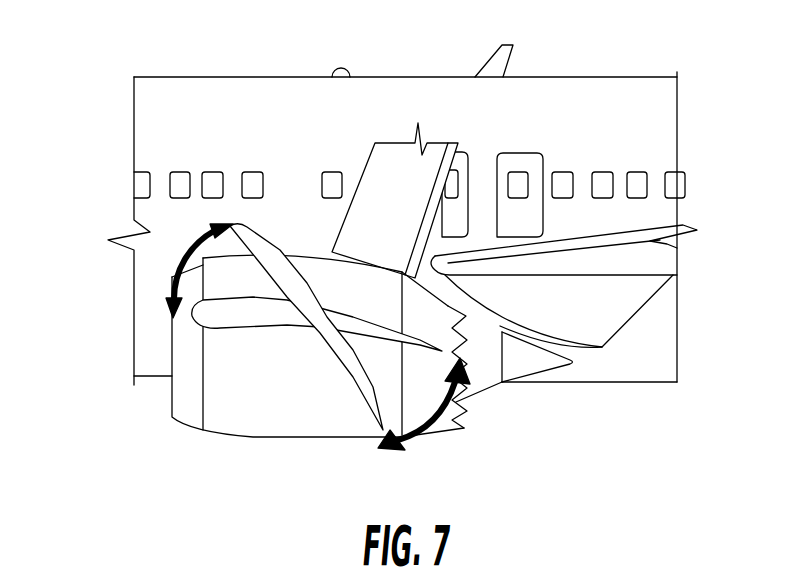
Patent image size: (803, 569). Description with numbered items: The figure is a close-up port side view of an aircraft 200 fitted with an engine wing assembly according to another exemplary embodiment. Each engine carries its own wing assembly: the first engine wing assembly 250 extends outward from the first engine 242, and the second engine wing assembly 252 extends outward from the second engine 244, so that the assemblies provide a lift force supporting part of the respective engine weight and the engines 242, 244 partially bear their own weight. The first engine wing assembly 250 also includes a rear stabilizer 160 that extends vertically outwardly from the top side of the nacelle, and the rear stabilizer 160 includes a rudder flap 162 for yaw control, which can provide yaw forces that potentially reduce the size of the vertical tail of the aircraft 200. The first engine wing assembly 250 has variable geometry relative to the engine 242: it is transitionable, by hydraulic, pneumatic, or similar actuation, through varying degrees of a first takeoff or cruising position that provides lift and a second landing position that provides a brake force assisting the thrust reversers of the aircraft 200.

The aircraft 200 is at (385, 251).
The rear stabilizer 160 is at (383, 188).
The rudder flap 162 is at (440, 208).
The first engine 242 is at (317, 363).
The second engine 244 is at (283, 437).
The first engine wing assembly 250 is at (255, 327).
The second engine wing assembly 252 is at (145, 282).